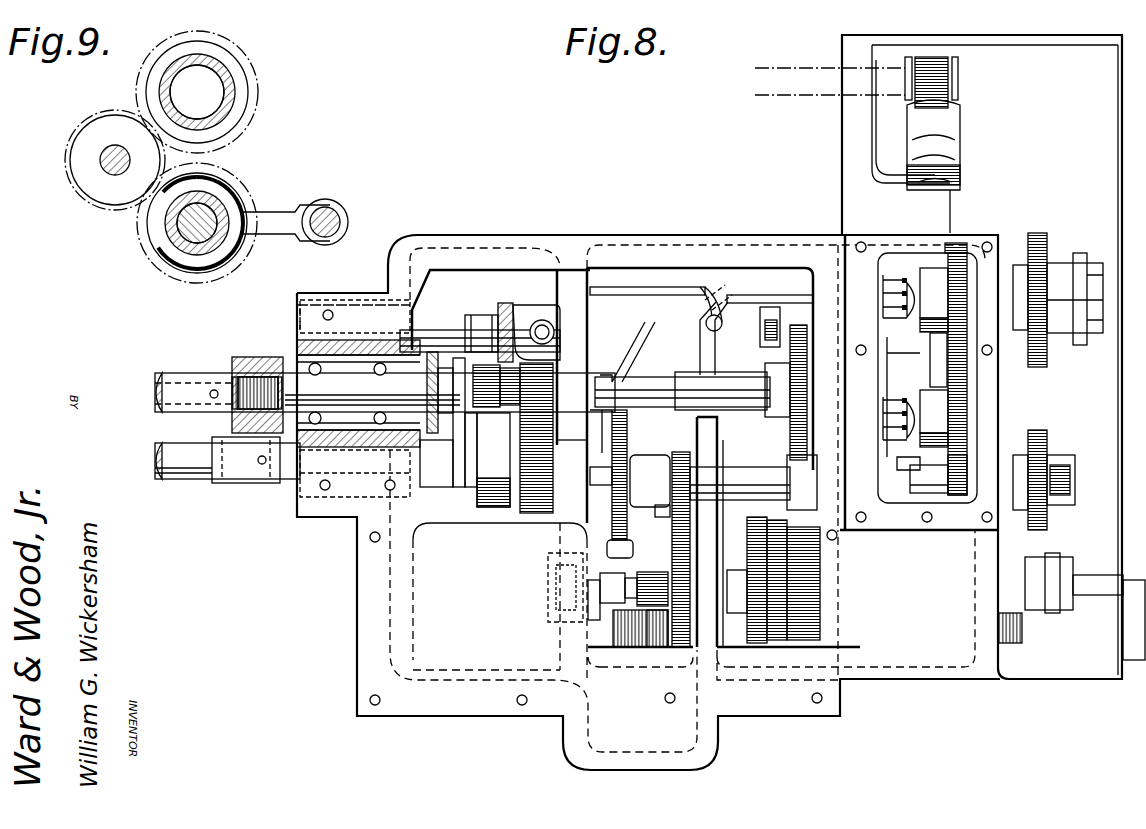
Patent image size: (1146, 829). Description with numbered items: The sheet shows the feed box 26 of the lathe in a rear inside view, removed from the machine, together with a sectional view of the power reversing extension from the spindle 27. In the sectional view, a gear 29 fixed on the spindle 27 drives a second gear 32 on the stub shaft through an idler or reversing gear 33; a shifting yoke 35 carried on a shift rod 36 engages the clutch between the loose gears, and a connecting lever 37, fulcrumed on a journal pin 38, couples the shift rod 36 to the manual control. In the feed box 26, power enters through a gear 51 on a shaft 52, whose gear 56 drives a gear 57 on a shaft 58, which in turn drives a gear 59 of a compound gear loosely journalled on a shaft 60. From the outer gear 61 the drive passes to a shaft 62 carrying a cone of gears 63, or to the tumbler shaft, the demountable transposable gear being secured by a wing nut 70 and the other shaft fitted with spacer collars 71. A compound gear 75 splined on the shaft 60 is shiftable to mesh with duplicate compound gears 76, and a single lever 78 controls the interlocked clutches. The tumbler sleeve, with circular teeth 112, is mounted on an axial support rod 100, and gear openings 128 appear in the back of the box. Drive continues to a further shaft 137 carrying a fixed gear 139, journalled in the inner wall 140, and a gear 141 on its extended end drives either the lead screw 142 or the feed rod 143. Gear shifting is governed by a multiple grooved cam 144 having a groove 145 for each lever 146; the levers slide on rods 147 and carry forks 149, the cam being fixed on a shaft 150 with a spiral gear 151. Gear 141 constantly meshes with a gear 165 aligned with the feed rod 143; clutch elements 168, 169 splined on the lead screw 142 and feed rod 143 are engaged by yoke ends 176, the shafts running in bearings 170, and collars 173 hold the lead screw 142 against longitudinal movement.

In FIG. 8, the feed box 26 is at (458, 588).
In FIG. 9, the spindle 27 is at (199, 66).
In FIG. 9, the gear 29 is at (256, 82).
In FIG. 9, the second gear 32 is at (156, 255).
In FIG. 9, the idler or reversing gear 33 is at (66, 162).
In FIG. 9, the shifting yoke 35 is at (243, 204).
In FIG. 9, the shift rod 36 is at (329, 208).
In FIG. 8, the shift rod 36 is at (830, 97).
In FIG. 8, the connecting lever 37 is at (940, 130).
In FIG. 8, the journal pin 38 is at (932, 180).
In FIG. 8, the gear 51 is at (1037, 235).
In FIG. 8, the shaft 52 is at (918, 288).
In FIG. 8, the gear 56 is at (957, 245).
In FIG. 8, the gear 57 is at (965, 390).
In FIG. 8, the shaft 58 is at (918, 410).
In FIG. 8, the gear of compound gear 59 is at (957, 505).
In FIG. 8, the shaft 60 is at (769, 482).
In FIG. 8, the outer gear of compound gear 61 is at (1040, 440).
In FIG. 8, the shaft 62 is at (600, 588).
In FIG. 8, the cone of gears 63 is at (765, 612).
In FIG. 8, the wing nut 70 is at (1062, 468).
In FIG. 8, the spacer collars 71 is at (1040, 610).
In FIG. 8, the compound gear 75 is at (650, 481).
In FIG. 8, the duplicate compound gears 76 is at (678, 560).
In FIG. 8, the single lever 78 is at (660, 515).
In FIG. 8, the axial support rod 100 is at (608, 625).
In FIG. 8, the circular teeth 112 is at (657, 648).
In FIG. 8, the gear openings 128 is at (588, 605).
In FIG. 8, the further shaft 137 is at (722, 400).
In FIG. 8, the fixed gear 139 is at (792, 430).
In FIG. 8, the inner wall 140 is at (575, 290).
In FIG. 8, the gear 141 is at (522, 410).
In FIG. 8, the lead screw 142 is at (175, 385).
In FIG. 8, the feed rod 143 is at (183, 466).
In FIG. 8, the multiple grooved cam 144 is at (632, 360).
In FIG. 8, the groove 145 is at (745, 337).
In FIG. 8, the lever 146 is at (695, 290).
In FIG. 8, the rods 147 is at (703, 288).
In FIG. 8, the forks 149 is at (630, 440).
In FIG. 8, the shaft 150 is at (778, 325).
In FIG. 8, the spiral gear 151 is at (507, 305).
In FIG. 8, the gear 165 is at (540, 514).
In FIG. 8, the clutch element 168 is at (495, 386).
In FIG. 8, the clutch element 169 is at (486, 476).
In FIG. 8, the bearings 170 is at (368, 375).
In FIG. 8, the collars 173 is at (262, 355).
In FIG. 8, the yoke ends 176 is at (456, 488).